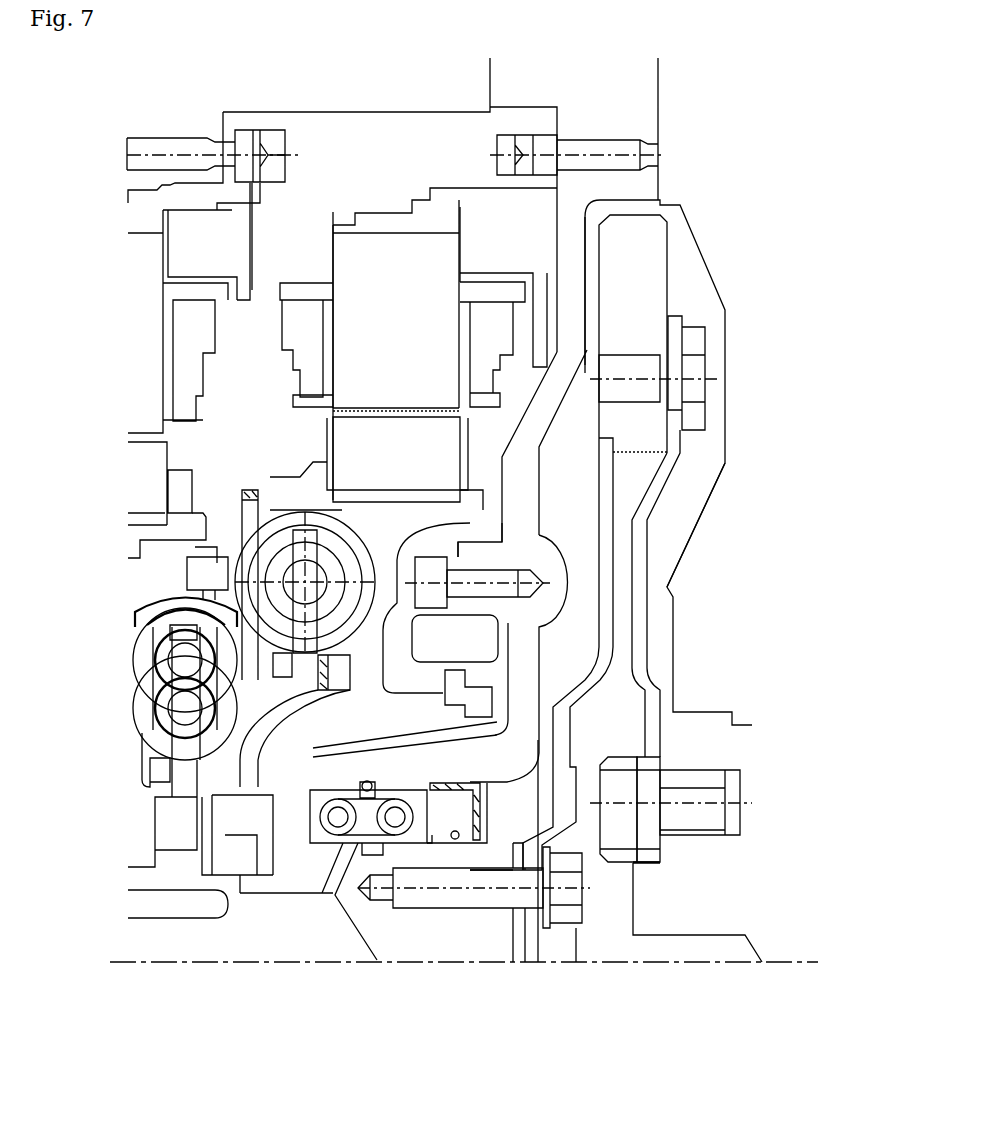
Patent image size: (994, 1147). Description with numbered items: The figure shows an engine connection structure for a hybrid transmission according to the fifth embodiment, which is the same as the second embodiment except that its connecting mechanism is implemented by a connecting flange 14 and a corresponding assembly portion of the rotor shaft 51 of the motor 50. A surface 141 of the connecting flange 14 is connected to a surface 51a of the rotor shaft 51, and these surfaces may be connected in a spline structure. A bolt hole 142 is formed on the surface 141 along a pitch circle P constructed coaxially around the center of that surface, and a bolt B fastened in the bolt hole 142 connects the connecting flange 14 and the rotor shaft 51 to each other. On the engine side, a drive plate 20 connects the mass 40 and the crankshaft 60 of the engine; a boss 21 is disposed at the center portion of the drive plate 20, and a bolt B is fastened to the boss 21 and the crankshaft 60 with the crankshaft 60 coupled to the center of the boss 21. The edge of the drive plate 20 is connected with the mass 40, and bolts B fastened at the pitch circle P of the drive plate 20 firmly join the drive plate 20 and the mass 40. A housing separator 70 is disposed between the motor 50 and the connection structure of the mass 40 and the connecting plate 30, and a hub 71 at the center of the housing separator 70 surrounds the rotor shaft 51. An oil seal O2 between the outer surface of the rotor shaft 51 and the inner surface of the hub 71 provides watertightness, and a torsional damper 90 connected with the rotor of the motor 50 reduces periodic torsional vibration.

The connecting flange 14 is at (558, 928).
The surface of the connecting flange 141 is at (510, 918).
The bolt hole 142 is at (578, 924).
The drive plate 20 is at (638, 556).
The boss 21 is at (657, 850).
The connecting plate 30 is at (608, 515).
The mass 40 is at (648, 243).
The motor 50 is at (366, 240).
The rotor shaft 51 is at (487, 860).
The surface of the rotor shaft 51a is at (522, 915).
The crankshaft 60 is at (682, 894).
The housing separator 70 is at (537, 395).
The hub 71 is at (333, 766).
The torsional damper 90 is at (146, 590).
The bolt B is at (698, 366).
The pitch circle P is at (643, 378).
The oil seal O2 is at (362, 840).